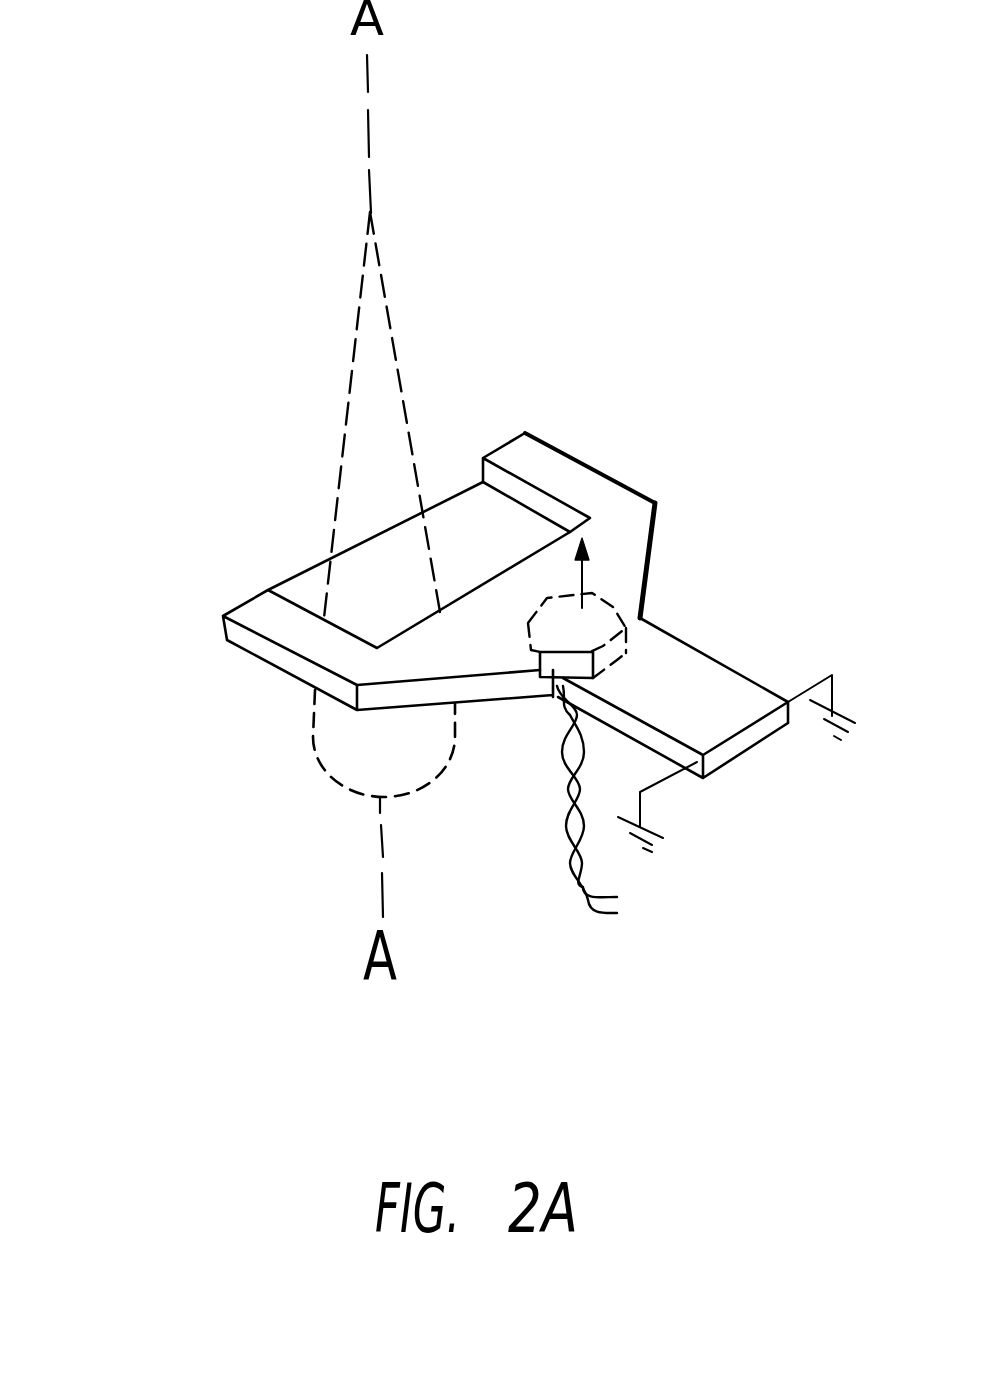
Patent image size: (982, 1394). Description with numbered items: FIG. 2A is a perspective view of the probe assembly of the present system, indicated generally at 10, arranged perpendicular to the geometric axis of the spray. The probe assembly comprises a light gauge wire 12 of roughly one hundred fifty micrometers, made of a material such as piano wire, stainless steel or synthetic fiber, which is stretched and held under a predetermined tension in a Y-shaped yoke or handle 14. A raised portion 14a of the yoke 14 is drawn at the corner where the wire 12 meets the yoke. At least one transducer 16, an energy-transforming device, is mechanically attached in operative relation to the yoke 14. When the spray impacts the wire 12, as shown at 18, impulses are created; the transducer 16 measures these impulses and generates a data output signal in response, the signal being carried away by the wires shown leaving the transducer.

The force sensor assembly 10 is at (630, 223).
The light gauge wire 12 is at (295, 592).
The Y-shaped yoke 14 is at (712, 622).
The raised block of flexure plate 14a is at (555, 467).
The transducer 16 is at (577, 660).
The spray impact 18 is at (370, 763).